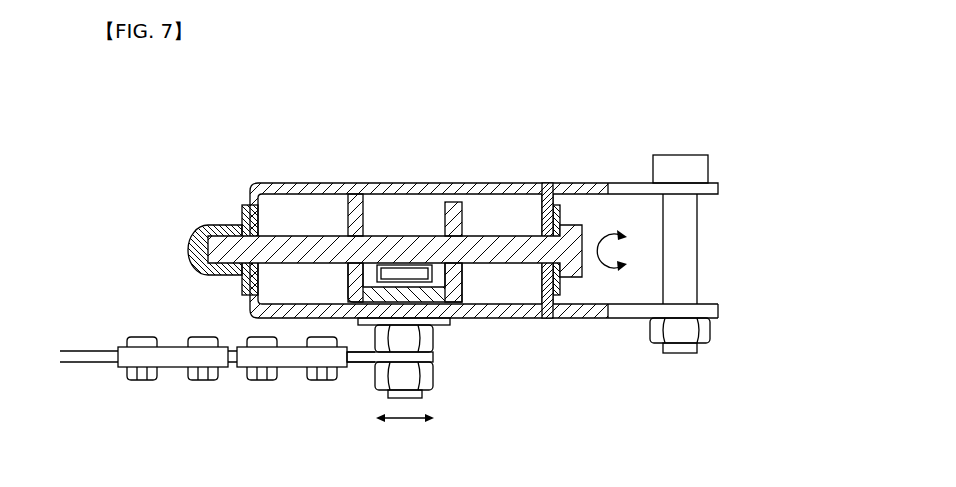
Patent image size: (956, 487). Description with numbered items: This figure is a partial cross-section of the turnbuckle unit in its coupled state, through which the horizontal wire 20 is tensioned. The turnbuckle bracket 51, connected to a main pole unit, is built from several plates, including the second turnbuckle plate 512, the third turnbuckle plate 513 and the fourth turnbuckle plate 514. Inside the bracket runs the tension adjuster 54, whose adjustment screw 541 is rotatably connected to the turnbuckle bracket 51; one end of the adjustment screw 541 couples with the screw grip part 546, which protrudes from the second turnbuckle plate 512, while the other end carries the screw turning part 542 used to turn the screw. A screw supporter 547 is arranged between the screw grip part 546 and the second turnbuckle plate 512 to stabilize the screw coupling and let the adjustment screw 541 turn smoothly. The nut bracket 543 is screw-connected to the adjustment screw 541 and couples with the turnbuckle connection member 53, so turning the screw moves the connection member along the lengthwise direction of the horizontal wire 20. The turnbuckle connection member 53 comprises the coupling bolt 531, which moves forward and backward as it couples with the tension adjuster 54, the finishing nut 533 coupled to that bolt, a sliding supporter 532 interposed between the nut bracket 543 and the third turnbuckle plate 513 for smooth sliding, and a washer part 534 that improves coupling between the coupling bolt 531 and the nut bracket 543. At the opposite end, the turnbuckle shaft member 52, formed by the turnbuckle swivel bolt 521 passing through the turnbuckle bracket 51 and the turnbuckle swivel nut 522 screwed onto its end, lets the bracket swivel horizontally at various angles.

The horizontal wire 20 is at (89, 338).
The turnbuckle bracket 51 is at (436, 270).
The second turnbuckle plate 512 is at (250, 313).
The third turnbuckle plate 513 is at (288, 318).
The fourth turnbuckle plate 514 is at (546, 300).
The turnbuckle shaft member 52 is at (732, 254).
The turnbuckle swivel bolt 521 is at (700, 163).
The turnbuckle swivel nut 522 is at (713, 335).
The turnbuckle connection member 53 is at (454, 350).
The coupling bolt 531 is at (458, 300).
The sliding supporter 532 is at (435, 340).
The finishing nut 533 is at (437, 378).
The washer part 534 is at (432, 272).
The tension adjuster 54 is at (383, 230).
The adjustment screw 541 is at (472, 216).
The screw turning part 542 is at (572, 212).
The nut bracket 543 is at (372, 205).
The screw grip part 546 is at (198, 232).
The screw supporter 547 is at (242, 212).